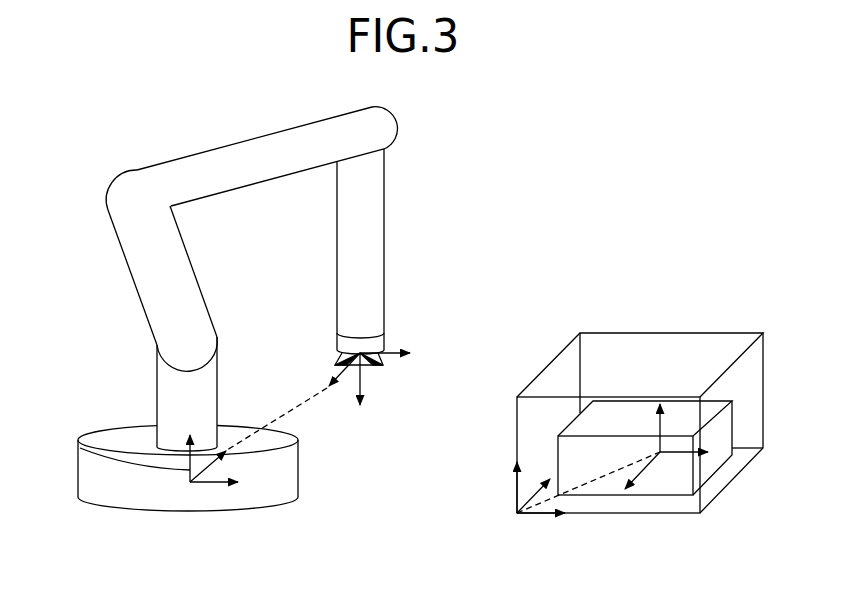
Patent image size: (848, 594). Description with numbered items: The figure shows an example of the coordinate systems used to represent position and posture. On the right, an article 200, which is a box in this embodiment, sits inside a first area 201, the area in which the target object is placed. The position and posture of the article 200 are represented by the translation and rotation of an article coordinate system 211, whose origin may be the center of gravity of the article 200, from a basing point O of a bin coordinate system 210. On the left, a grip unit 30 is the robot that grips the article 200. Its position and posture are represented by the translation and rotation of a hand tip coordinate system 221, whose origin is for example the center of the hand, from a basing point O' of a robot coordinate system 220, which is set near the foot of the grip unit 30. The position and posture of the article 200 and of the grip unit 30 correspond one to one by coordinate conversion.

The grip unit 30 is at (252, 138).
The article 200 is at (732, 430).
The first area 201 is at (672, 333).
The bin coordinate system 210 is at (515, 487).
The article coordinate system 211 is at (674, 455).
The robot coordinate system 220 is at (79, 449).
The hand tip coordinate system 221 is at (362, 378).